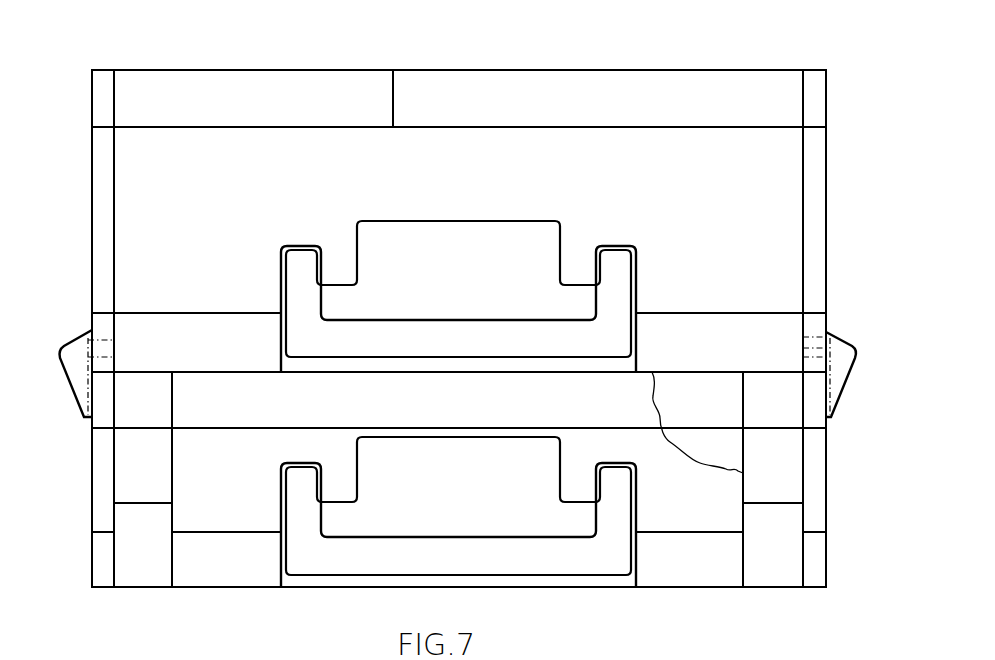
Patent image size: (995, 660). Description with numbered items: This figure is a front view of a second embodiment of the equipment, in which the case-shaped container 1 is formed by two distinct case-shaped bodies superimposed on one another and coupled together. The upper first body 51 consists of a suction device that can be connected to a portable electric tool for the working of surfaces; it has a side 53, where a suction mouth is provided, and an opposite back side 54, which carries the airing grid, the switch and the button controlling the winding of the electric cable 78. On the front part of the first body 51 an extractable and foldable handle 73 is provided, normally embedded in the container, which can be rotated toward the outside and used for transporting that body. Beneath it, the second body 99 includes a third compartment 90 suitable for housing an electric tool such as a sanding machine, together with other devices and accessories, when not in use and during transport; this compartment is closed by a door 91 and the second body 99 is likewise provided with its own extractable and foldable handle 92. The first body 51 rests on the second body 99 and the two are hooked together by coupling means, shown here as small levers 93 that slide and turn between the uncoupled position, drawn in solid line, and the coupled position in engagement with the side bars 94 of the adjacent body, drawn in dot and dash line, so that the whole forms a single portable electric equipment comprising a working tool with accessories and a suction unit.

The case-shaped container 1 is at (446, 71).
The first body 51 is at (747, 217).
The side 53 is at (100, 257).
The back side 54 is at (827, 248).
The extractable and foldable handle 73 is at (300, 265).
The electric cable 78 is at (737, 652).
The third compartment 90 is at (720, 451).
The door 91 is at (225, 502).
The extractable and foldable handle 92 is at (300, 502).
The small levers 93 is at (62, 347).
The side bars 94 is at (114, 356).
The second body 99 is at (690, 505).